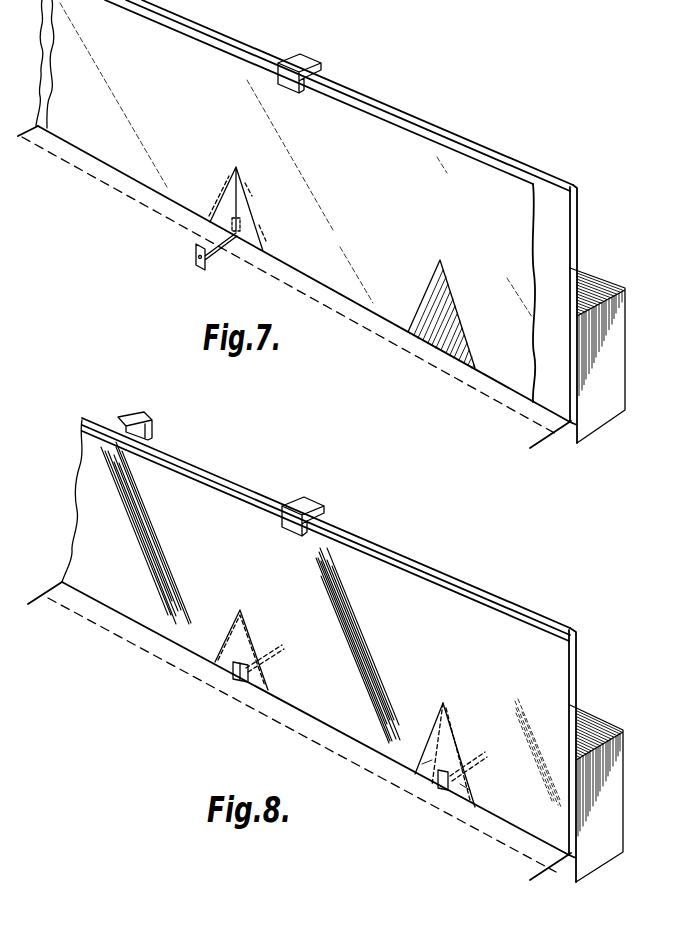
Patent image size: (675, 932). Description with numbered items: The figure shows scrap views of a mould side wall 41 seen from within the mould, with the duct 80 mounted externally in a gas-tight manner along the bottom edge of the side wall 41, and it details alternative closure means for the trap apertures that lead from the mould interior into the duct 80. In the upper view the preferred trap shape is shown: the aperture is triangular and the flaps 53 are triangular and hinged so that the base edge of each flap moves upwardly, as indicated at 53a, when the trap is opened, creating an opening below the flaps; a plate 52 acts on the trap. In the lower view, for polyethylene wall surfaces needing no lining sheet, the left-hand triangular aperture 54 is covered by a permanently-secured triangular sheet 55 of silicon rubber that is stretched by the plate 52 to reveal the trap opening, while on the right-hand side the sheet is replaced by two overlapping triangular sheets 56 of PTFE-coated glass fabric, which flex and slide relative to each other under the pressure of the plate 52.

In FIG. 7, the side wall 41 is at (407, 112).
In FIG. 8, the side wall 41 is at (398, 556).
In FIG. 7, the duct 80 is at (593, 280).
In FIG. 8, the duct 80 is at (592, 726).
In FIG. 7, the plate 52 is at (200, 264).
In FIG. 8, the plate 52 is at (233, 672).
In FIG. 7, the flaps 53 is at (222, 200).
In FIG. 7, the opened flap position 53a is at (455, 331).
In FIG. 8, the triangular aperture 54 is at (228, 637).
In FIG. 8, the triangular sheet 55 is at (250, 636).
In FIG. 8, the overlapping triangular sheets 56 is at (423, 767).